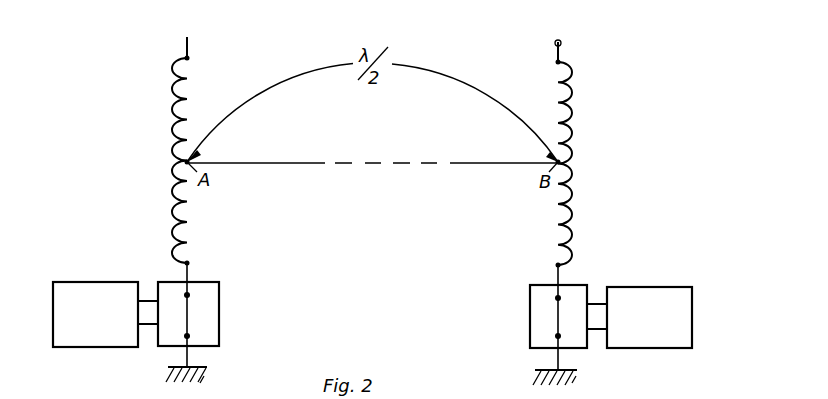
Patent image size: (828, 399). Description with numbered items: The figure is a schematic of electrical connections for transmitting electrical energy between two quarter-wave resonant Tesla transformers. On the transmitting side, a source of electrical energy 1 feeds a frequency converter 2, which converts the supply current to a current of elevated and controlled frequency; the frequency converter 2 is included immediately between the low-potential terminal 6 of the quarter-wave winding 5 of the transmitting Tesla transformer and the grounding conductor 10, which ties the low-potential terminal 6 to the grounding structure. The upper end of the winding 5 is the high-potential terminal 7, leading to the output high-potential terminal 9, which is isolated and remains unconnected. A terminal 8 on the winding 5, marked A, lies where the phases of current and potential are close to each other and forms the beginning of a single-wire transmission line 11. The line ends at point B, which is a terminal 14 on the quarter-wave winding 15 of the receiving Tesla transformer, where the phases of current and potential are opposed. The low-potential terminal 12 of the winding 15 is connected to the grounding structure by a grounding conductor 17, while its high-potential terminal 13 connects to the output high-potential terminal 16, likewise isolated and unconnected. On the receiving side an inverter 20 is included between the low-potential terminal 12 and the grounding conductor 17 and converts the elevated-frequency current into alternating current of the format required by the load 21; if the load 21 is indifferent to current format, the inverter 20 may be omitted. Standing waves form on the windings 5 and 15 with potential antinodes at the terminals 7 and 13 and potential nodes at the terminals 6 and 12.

The source of electrical energy 1 is at (78, 281).
The frequency converter 2 is at (172, 281).
The quarter-wave winding of the transmitting Tesla transformer 5 is at (176, 212).
The low-potential terminal 6 is at (189, 262).
The high-potential terminal of winding 5 7 is at (189, 57).
The terminal A of winding 5 8 is at (190, 159).
The output high-potential terminal of the transmitting Tesla transformer 9 is at (188, 39).
The grounding conductor 10 is at (188, 358).
The single-wire transmission line 11 is at (283, 161).
The low-potential terminal of winding 15 12 is at (555, 264).
The high-potential terminal of winding 15 13 is at (556, 61).
The terminal B of winding 15 14 is at (553, 158).
The quarter-wave winding of the receiving Tesla transformer 15 is at (565, 200).
The output high-potential terminal of the receiving Tesla transformer 16 is at (554, 42).
The grounding conductor 17 is at (553, 362).
The inverter 20 is at (581, 285).
The load 21 is at (661, 286).